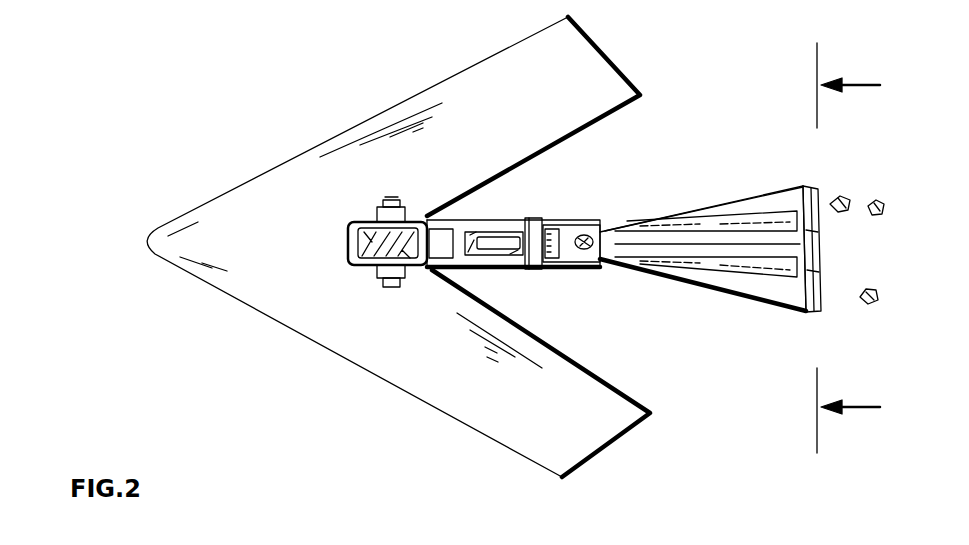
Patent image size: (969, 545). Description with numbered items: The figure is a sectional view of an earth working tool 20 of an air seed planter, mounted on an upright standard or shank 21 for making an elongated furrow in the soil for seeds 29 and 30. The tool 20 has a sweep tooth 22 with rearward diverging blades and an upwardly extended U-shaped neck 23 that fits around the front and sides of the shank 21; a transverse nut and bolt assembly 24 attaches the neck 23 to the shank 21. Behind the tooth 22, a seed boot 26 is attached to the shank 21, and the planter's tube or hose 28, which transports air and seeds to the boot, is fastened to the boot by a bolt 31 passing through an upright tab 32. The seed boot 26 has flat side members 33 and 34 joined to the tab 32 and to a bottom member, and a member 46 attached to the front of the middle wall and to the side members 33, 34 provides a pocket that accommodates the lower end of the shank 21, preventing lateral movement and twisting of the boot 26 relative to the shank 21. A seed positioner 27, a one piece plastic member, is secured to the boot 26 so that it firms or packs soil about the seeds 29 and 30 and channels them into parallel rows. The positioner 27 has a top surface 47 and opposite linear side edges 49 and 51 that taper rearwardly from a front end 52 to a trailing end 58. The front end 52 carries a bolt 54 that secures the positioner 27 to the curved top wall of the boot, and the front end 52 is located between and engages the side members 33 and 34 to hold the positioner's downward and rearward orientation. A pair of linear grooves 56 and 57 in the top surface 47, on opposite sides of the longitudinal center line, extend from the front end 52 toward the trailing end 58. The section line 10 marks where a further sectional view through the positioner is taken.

The sectional view line 10 is at (850, 249).
The earth working tool 20 is at (293, 120).
The shank 21 is at (368, 232).
The sweep tooth 22 is at (243, 186).
The neck 23 is at (348, 260).
The nut and bolt assembly 24 is at (382, 288).
The seed boot 26 is at (527, 272).
The seed positioner 27 is at (710, 186).
The tube 28 is at (520, 228).
The seeds 29 is at (858, 201).
The seeds 30 is at (864, 304).
The bolt 31 is at (552, 270).
The tab 32 is at (545, 221).
The side member 33 is at (465, 224).
The side member 34 is at (468, 270).
The member 46 is at (430, 268).
The top surface 47 is at (781, 198).
The side edge 49 is at (686, 210).
The side edge 51 is at (689, 284).
The front end 52 is at (588, 270).
The bolt 54 is at (602, 232).
The groove 56 is at (737, 266).
The groove 57 is at (738, 222).
The trailing end 58 is at (822, 202).